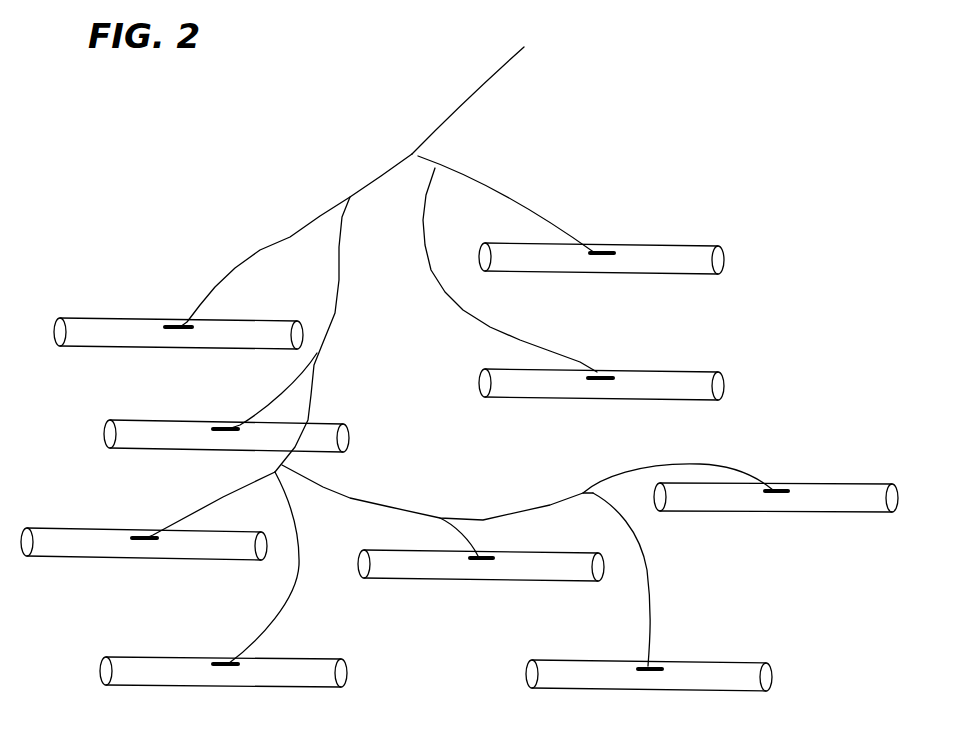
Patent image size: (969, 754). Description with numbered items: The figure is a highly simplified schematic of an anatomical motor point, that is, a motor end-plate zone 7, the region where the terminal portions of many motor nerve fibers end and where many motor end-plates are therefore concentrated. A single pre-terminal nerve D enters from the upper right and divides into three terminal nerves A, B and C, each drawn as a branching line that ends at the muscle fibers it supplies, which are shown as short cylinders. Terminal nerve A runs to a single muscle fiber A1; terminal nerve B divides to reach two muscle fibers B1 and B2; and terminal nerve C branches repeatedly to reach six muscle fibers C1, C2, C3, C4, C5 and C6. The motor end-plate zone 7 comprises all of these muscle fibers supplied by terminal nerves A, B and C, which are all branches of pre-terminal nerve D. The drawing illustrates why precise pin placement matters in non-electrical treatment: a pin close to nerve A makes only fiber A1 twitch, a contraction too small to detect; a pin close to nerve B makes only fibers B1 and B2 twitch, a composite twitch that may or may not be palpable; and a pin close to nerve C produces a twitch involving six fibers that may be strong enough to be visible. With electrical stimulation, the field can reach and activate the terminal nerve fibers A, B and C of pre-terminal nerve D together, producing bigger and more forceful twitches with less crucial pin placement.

The motor end-plate zone 7 is at (202, 180).
The terminal nerve A is at (259, 198).
The terminal nerve B is at (395, 207).
The terminal nerve C is at (345, 307).
The pre-terminal nerve D is at (523, 59).
The muscle fiber A1 is at (178, 334).
The muscle fiber B1 is at (601, 259).
The muscle fiber B2 is at (601, 385).
The muscle fiber C1 is at (226, 436).
The muscle fiber C2 is at (144, 544).
The muscle fiber C3 is at (223, 672).
The muscle fiber C4 is at (481, 566).
The muscle fiber C5 is at (776, 499).
The muscle fiber C6 is at (649, 675).